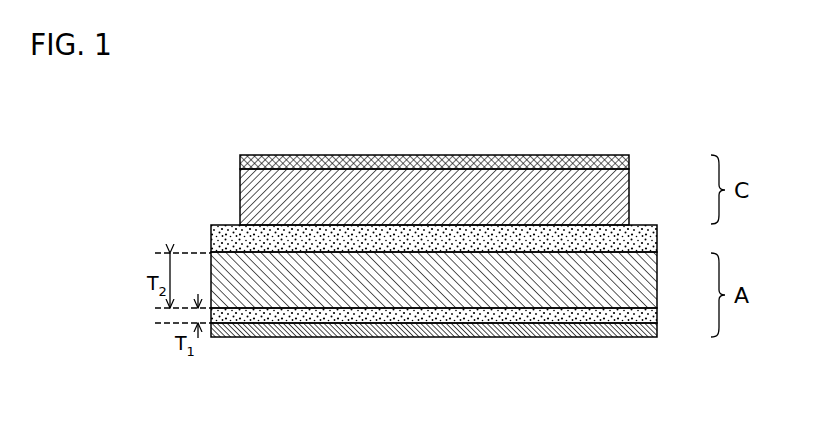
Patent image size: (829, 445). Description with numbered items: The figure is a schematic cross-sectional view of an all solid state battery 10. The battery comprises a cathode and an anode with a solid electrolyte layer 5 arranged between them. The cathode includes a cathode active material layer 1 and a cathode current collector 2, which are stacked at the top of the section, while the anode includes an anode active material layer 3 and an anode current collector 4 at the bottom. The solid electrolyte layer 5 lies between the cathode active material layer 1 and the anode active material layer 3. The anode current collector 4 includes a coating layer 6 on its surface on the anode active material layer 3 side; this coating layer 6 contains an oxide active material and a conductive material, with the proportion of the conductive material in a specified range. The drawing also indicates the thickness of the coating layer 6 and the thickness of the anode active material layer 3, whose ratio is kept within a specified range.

The all solid state battery 10 is at (641, 110).
The cathode active material layer 1 is at (625, 195).
The cathode current collector 2 is at (630, 159).
The anode active material layer 3 is at (640, 278).
The anode current collector 4 is at (655, 331).
The solid electrolyte layer 5 is at (640, 240).
The coating layer 6 is at (655, 314).